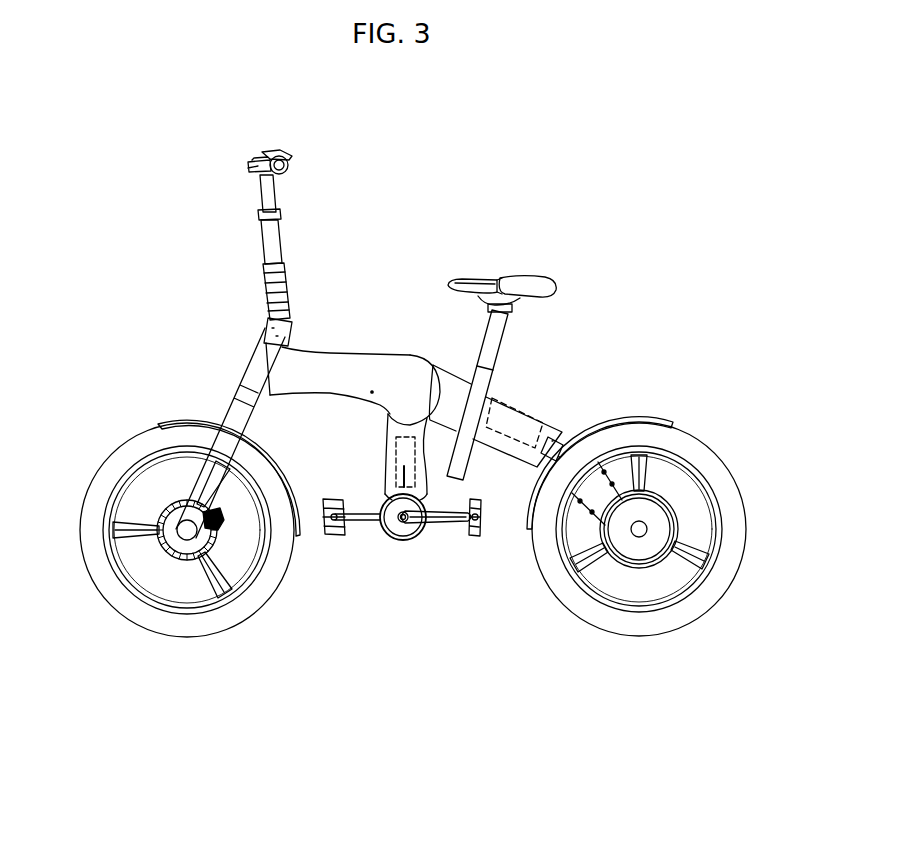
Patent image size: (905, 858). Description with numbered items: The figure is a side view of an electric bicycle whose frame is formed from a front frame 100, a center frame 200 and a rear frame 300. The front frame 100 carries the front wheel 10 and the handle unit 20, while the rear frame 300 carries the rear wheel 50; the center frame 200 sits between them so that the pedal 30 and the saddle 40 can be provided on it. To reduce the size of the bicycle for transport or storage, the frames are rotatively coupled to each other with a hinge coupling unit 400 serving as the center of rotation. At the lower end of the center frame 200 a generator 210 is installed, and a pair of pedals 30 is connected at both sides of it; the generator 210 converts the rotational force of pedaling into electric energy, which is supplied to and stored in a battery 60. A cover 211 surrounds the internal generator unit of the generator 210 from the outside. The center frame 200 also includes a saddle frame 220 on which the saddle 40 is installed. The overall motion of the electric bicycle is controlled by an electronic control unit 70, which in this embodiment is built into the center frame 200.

The front wheel 10 is at (112, 585).
The handle unit 20 is at (238, 164).
The pedal 30 is at (472, 524).
The saddle 40 is at (527, 283).
The rear wheel 50 is at (566, 598).
The battery 60 is at (504, 450).
The electronic control unit (ECU) 70 is at (393, 452).
The front frame 100 is at (332, 354).
The center frame 200 is at (369, 551).
The generator 210 is at (397, 541).
The cover 211 is at (413, 528).
The saddle frame 220 is at (455, 378).
The rear frame 300 is at (531, 401).
The hinge coupling unit 400 is at (397, 354).